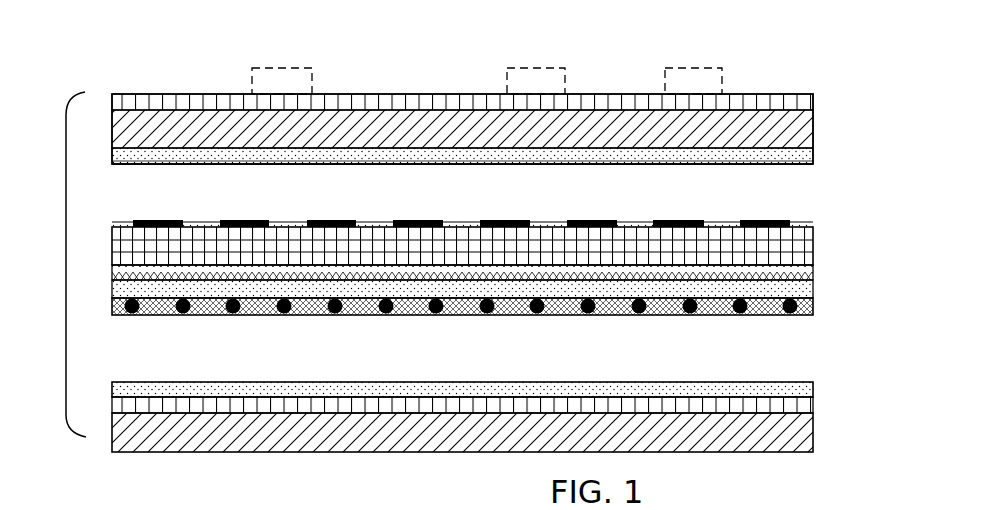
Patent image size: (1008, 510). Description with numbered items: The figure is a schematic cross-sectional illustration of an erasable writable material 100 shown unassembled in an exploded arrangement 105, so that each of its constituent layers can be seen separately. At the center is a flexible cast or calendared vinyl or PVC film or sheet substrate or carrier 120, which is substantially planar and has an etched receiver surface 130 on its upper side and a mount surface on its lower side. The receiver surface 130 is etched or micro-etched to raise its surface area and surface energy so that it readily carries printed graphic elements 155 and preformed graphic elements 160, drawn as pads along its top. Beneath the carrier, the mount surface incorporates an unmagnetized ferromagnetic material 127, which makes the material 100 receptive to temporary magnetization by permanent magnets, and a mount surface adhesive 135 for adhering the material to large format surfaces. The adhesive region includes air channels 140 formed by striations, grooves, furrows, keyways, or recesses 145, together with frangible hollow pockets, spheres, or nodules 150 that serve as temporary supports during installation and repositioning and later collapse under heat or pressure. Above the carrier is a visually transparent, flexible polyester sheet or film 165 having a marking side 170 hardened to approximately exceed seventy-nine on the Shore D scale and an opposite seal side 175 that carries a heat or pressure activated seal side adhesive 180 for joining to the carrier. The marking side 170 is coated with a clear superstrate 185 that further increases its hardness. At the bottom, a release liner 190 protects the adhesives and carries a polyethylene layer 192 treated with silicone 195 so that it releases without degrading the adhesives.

The erasable writable material 100 is at (104, 64).
The exploded arrangement 105 is at (65, 268).
The film or sheet substrate or carrier 120 is at (813, 245).
The unmagnetized ferromagnetic material 127 is at (813, 272).
The receiver surface 130 is at (128, 221).
The mount surface adhesive 135 is at (815, 289).
The air channels 140 is at (112, 312).
The striations, grooves, furrows, keyways, and/or recesses 145 is at (160, 315).
The frangible hollow pockets, spheres, or nodules 150 is at (287, 315).
The printed graphic elements 155 is at (408, 221).
The preformed graphic elements 160 is at (229, 221).
The polyester sheet or film 165 is at (813, 128).
The marking side 170 is at (778, 110).
The seal side 175 is at (797, 152).
The seal side adhesive 180 is at (789, 167).
The clear superstrate 185 is at (437, 94).
The release liner 190 is at (813, 440).
The polyethylene layer or coating 192 is at (813, 400).
The silicone 195 is at (815, 383).